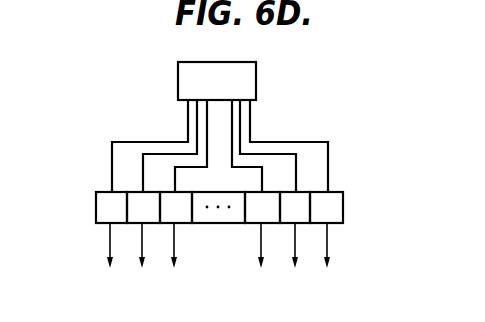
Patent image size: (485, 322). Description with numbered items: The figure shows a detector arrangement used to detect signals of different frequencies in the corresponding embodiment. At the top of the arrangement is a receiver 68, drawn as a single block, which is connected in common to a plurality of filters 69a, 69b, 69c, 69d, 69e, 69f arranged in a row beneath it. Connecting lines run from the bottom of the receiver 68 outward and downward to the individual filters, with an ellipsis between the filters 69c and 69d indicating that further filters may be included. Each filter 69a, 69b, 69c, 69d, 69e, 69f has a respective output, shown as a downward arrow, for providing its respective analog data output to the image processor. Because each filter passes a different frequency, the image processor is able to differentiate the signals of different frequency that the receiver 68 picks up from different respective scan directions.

The receiver 68 is at (256, 80).
The filter 69a is at (102, 223).
The filter 69b is at (133, 223).
The filter 69c is at (165, 223).
The filter 69d is at (252, 223).
The filter 69e is at (287, 223).
The filter 69f is at (333, 223).